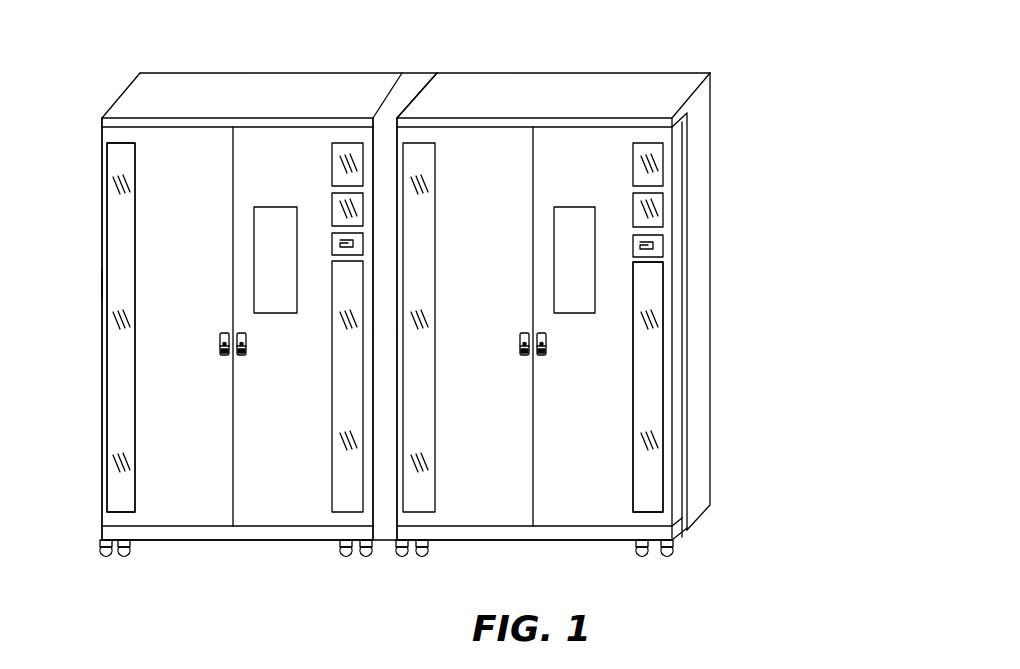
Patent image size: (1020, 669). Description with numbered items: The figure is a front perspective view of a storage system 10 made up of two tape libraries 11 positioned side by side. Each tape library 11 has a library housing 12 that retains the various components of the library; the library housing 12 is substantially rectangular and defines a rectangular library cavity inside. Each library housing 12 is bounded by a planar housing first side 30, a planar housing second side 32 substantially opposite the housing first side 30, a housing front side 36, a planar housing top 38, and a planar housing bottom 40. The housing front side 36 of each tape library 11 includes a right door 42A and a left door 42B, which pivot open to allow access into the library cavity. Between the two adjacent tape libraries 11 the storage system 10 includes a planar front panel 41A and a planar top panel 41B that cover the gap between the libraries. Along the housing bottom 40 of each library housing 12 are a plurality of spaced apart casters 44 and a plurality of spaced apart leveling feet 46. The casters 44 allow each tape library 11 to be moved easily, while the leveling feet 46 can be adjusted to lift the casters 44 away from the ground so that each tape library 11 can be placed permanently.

The storage system 10 is at (670, 48).
The tape library 11 is at (136, 100).
The library housing 12 is at (100, 340).
The housing first side 30 is at (100, 280).
The housing second side 32 is at (703, 298).
The housing front side 36 is at (152, 228).
The housing top 38 is at (275, 103).
The housing bottom 40 is at (222, 543).
The front panel 41A is at (378, 497).
The top panel 41B is at (413, 88).
The right door 42A is at (311, 153).
The left door 42B is at (193, 153).
The casters 44 is at (124, 548).
The leveling feet 46 is at (98, 552).